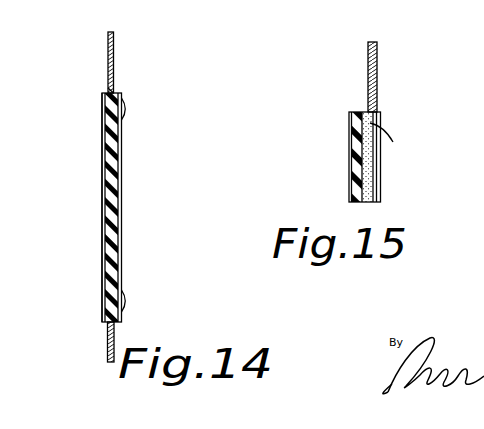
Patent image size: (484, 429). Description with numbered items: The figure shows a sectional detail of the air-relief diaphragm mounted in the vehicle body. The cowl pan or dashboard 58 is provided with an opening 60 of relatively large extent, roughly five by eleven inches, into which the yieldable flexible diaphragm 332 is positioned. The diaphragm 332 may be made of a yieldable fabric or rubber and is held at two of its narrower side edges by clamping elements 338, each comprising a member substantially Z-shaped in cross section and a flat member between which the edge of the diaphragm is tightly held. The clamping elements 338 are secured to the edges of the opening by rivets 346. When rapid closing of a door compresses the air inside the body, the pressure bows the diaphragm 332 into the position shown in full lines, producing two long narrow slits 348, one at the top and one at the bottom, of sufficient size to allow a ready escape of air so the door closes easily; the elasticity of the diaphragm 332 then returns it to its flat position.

In FIG. 14, the cowl pan or dashboard 58 is at (113, 53).
In FIG. 15, the cowl pan or dashboard 58 is at (378, 60).
In FIG. 14, the opening 60 is at (108, 92).
In FIG. 15, the opening 60 is at (379, 110).
In FIG. 14, the diaphragm 332 is at (119, 216).
In FIG. 15, the diaphragm 332 is at (369, 187).
In FIG. 14, the clamping element 338 is at (102, 178).
In FIG. 14, the rivet 346 is at (123, 110).
In FIG. 15, the slit or opening 348 is at (362, 112).